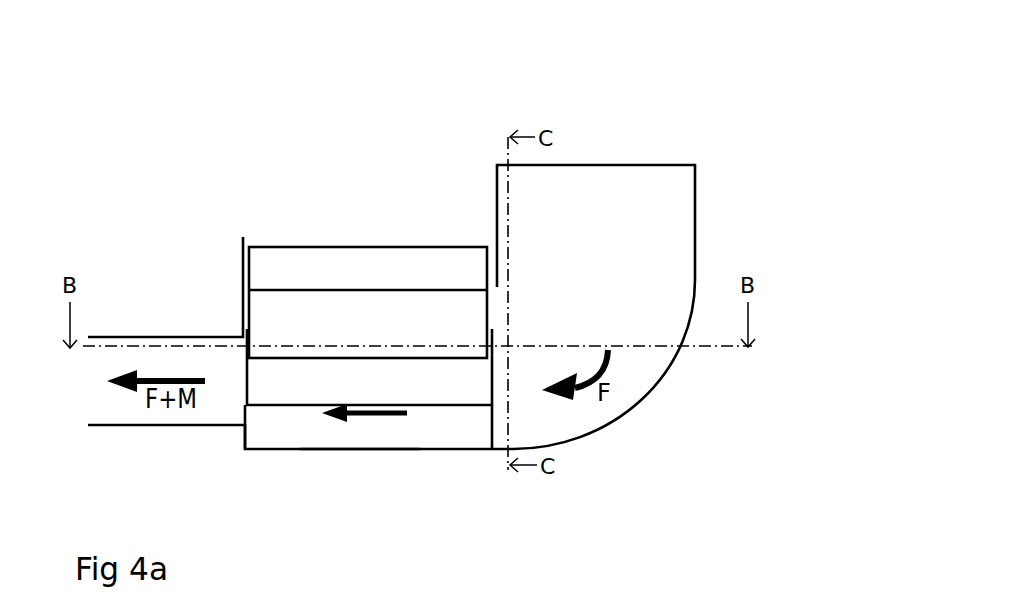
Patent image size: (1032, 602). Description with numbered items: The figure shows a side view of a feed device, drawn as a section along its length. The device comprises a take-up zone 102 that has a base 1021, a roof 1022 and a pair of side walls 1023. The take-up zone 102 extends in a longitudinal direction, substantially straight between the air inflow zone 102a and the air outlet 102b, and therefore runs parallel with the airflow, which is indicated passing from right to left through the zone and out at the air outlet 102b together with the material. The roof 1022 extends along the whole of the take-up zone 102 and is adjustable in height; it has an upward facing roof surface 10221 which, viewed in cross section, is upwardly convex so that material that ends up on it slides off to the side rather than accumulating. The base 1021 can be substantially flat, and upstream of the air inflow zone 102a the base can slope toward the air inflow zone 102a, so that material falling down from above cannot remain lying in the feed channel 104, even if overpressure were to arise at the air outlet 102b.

The take-up zone 102 is at (423, 428).
The air inflow zone 102a is at (490, 428).
The air outlet 102b is at (246, 417).
The base 1021 is at (357, 449).
The roof 1022 is at (345, 318).
The roof surface 10221 is at (403, 275).
The side walls 1023 is at (297, 383).
The feed channel 104 is at (595, 220).